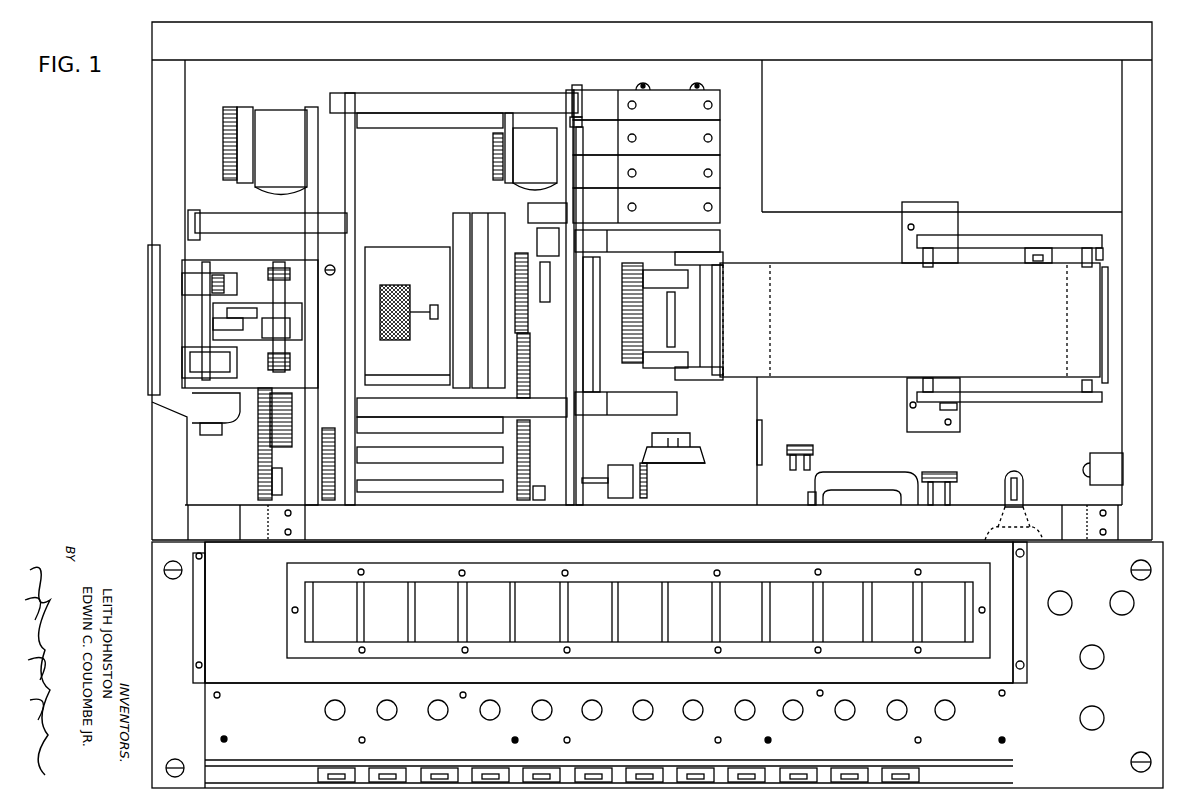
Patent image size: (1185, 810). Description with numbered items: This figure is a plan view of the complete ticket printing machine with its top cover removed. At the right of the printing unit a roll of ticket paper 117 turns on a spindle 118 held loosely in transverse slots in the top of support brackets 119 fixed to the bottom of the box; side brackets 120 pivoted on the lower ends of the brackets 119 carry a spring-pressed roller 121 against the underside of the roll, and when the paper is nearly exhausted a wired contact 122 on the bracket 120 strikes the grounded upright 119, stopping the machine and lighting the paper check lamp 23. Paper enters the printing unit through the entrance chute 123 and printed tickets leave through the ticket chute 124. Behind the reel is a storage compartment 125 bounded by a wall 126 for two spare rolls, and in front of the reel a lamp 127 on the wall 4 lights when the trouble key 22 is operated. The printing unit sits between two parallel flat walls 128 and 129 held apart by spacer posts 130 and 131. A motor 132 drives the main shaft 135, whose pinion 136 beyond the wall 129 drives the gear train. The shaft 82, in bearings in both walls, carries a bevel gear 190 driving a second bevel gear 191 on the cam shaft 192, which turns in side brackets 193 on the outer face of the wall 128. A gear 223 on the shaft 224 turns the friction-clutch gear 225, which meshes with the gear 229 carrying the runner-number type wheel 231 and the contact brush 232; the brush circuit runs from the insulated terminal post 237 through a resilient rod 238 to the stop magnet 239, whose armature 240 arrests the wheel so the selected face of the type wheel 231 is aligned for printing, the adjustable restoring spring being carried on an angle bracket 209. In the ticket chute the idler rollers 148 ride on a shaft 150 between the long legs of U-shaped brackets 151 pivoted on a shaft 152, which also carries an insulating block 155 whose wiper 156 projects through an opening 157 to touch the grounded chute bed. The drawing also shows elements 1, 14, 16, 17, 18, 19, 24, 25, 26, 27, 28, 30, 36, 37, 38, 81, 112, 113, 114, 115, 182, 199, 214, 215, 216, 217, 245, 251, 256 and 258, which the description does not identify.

The apparatus housing 1 is at (152, 183).
The wall 4 is at (975, 528).
The mounting bracket 14 is at (255, 521).
The relay 16 is at (1110, 453).
The front panel 17 is at (158, 588).
The push buttons 18 is at (325, 710).
The bracket plate 19 is at (907, 420).
The trouble key 22 is at (1104, 716).
The paper check lamp 23 is at (1103, 662).
The green indicator lamp 24 is at (1064, 592).
The white indicator lamp 25 is at (1122, 592).
The panel face 26 is at (223, 610).
The display window 27 is at (850, 600).
The panel screw 28 is at (197, 662).
The button panel strip 30 is at (1000, 718).
The lower panel rail 36 is at (1000, 776).
The pilot light 37 is at (236, 724).
The terminal connectors 38 is at (890, 768).
The bearing block 81 is at (550, 495).
The shaft 82 is at (400, 494).
The switch actuator 112 is at (815, 495).
The switch housing 113 is at (895, 478).
The adjusting knob 114 is at (810, 445).
The adjusting knob 115 is at (952, 462).
The roll of ticket paper 117 is at (826, 290).
The spindle 118 is at (923, 385).
The support brackets 119 is at (902, 256).
The side brackets 120 is at (1015, 242).
The roller 121 is at (1103, 248).
The wired contact 122 is at (1025, 258).
The entrance chute 123 is at (712, 258).
The ticket chute 124 is at (148, 284).
The storage compartment 125 is at (910, 188).
The wall 126 is at (762, 196).
The lamp 127 is at (1020, 475).
The flat wall 128 is at (572, 92).
The flat wall 129 is at (350, 93).
The spacer post 130 is at (455, 100).
The spacer post 131 is at (410, 418).
The motor 132 is at (740, 405).
The main shaft 135 is at (322, 490).
The pinion 136 is at (262, 490).
The idler rollers 148 is at (190, 360).
The shaft 150 is at (205, 309).
The U shaped brackets 151 is at (243, 262).
The pivotal shaft 152 is at (280, 262).
The rectangular block 155 is at (262, 298).
The contact brush 156 is at (264, 328).
The opening 157 is at (213, 329).
The cross member 182 is at (208, 215).
The bevel gear 190 is at (647, 482).
The second bevel gear 191 is at (675, 465).
The cam shaft 192 is at (672, 440).
The side brackets 193 is at (660, 243).
The shaft bearing 199 is at (688, 279).
The angle bracket 209 is at (552, 405).
The terminal 214 is at (714, 208).
The terminal 215 is at (714, 174).
The terminal 216 is at (714, 141).
The terminal 217 is at (714, 108).
The gear 223 is at (530, 390).
The shaft 224 is at (410, 450).
The gear 225 is at (517, 495).
The gear 229 is at (518, 250).
The runner-number type-wheel 231 is at (503, 222).
The contact brush 232 is at (549, 270).
The insulated terminal post 237 is at (550, 213).
The resilient metallic rod 238 is at (548, 242).
The stop magnet 239 is at (535, 159).
The armature 240 is at (513, 186).
The motor 245 is at (403, 285).
The guide column 251 is at (460, 222).
The solenoid 256 is at (265, 151).
The drive gear 258 is at (643, 313).